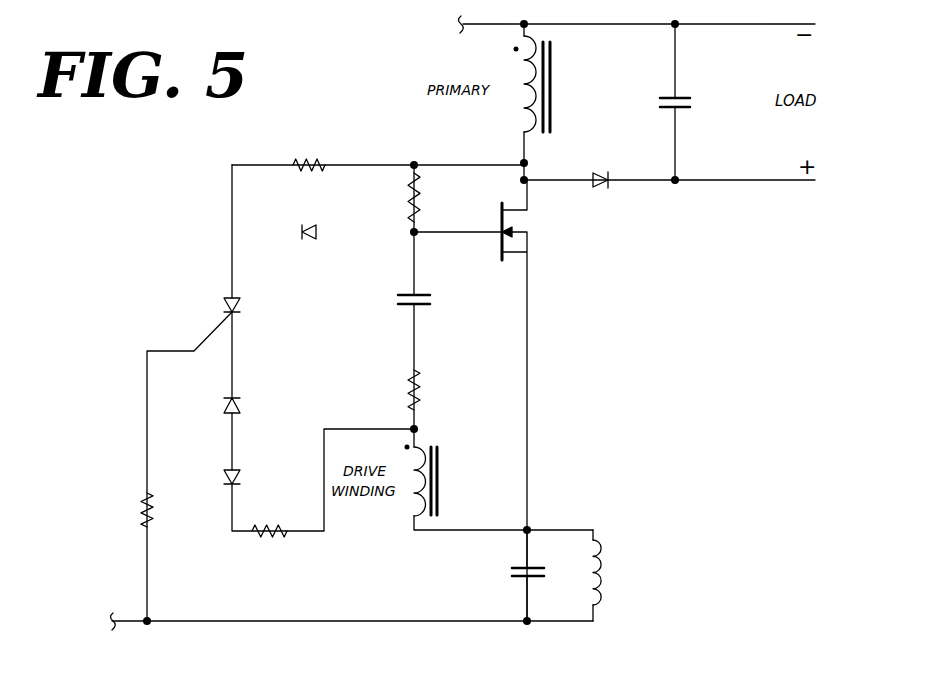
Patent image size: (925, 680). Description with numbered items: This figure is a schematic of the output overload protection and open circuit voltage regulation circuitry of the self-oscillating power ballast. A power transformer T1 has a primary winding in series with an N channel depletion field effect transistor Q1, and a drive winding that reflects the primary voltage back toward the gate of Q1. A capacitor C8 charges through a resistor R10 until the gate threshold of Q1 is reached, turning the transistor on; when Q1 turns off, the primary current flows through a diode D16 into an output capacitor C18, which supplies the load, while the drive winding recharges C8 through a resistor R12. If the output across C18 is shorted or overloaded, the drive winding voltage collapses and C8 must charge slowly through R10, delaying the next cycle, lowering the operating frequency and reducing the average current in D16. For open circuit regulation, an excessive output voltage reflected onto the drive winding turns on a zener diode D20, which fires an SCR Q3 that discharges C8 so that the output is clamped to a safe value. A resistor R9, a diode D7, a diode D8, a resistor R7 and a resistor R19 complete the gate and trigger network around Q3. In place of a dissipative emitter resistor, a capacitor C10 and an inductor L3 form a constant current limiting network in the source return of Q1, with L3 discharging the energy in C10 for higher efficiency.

The power transformer T1 is at (492, 276).
The output capacitor C18 is at (695, 105).
The output diode D16 is at (600, 167).
The N channel depletion field effect transistor Q1 is at (528, 231).
The resistor R9 is at (309, 154).
The resistor R10 is at (431, 197).
The diode D7 is at (311, 246).
The capacitor C8 is at (427, 301).
The resistor R12 is at (434, 390).
The SCR Q3 is at (246, 307).
The zener diode D20 is at (251, 407).
The diode D8 is at (246, 478).
The resistor R7 is at (131, 510).
The resistor R19 is at (272, 545).
The capacitor C10 is at (511, 575).
The inductor L3 is at (609, 572).